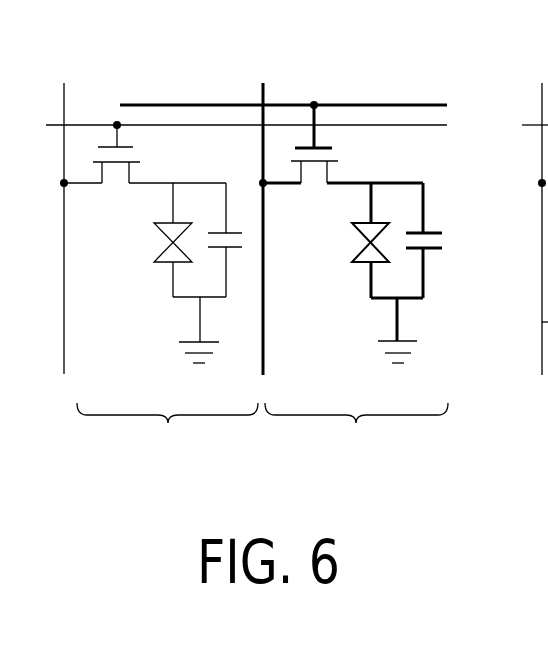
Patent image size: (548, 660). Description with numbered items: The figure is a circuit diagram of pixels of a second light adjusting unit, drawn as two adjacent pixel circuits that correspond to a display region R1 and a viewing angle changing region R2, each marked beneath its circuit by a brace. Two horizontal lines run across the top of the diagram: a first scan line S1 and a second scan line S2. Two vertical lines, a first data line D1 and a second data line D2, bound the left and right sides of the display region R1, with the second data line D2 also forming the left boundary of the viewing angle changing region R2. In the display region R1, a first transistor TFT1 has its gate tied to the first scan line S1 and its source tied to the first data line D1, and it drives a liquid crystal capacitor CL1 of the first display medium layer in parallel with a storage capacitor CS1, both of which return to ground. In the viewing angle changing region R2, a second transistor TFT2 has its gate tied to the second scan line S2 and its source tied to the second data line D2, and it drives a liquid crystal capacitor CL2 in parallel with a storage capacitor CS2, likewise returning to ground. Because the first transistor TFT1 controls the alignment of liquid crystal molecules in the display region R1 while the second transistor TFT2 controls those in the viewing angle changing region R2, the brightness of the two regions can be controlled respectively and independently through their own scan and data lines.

The first scan line S1 is at (90, 123).
The second scan line S2 is at (157, 104).
The first data line D1 is at (64, 320).
The second data line D2 is at (263, 315).
The first transistor TFT1 is at (145, 154).
The second transistor TFT2 is at (343, 144).
The capacitor of the first display medium layer CL1 is at (167, 240).
The capacitor of the first display medium layer CL2 is at (365, 240).
The first storage capacitor CS1 is at (212, 240).
The second storage capacitor CS2 is at (439, 240).
The display region R1 is at (167, 432).
The viewing angle changing region R2 is at (356, 433).